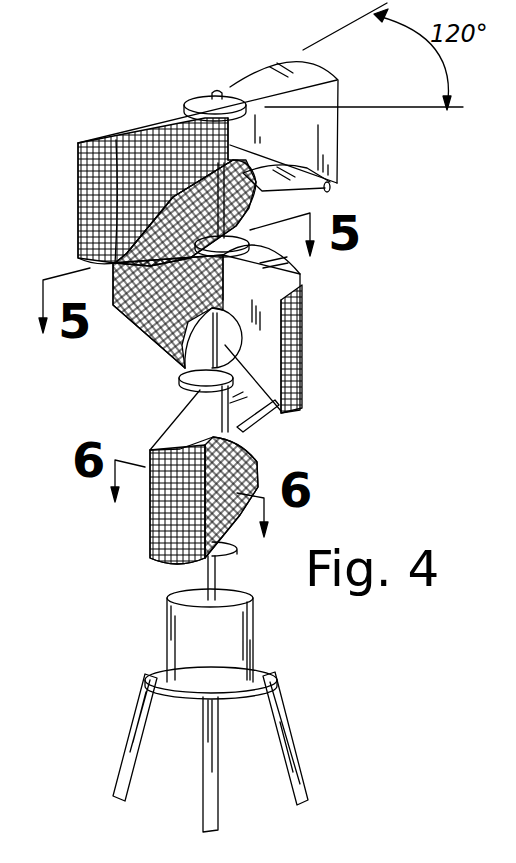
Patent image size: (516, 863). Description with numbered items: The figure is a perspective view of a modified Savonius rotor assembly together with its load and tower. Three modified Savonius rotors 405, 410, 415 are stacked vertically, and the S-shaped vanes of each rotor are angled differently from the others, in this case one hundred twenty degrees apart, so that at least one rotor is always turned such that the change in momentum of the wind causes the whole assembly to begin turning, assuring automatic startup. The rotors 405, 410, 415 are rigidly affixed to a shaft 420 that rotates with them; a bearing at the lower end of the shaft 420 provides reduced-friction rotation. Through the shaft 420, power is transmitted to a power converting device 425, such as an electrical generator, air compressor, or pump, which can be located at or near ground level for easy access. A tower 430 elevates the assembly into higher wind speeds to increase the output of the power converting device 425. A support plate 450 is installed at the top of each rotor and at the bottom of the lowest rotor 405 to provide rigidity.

The modified Savonius rotor 405 is at (152, 531).
The modified Savonius rotor 410 is at (302, 333).
The modified Savonius rotor 415 is at (78, 165).
The shaft 420 is at (203, 578).
The power converting device 425 is at (248, 641).
The tower 430 is at (286, 727).
The support plate 450 is at (198, 96).